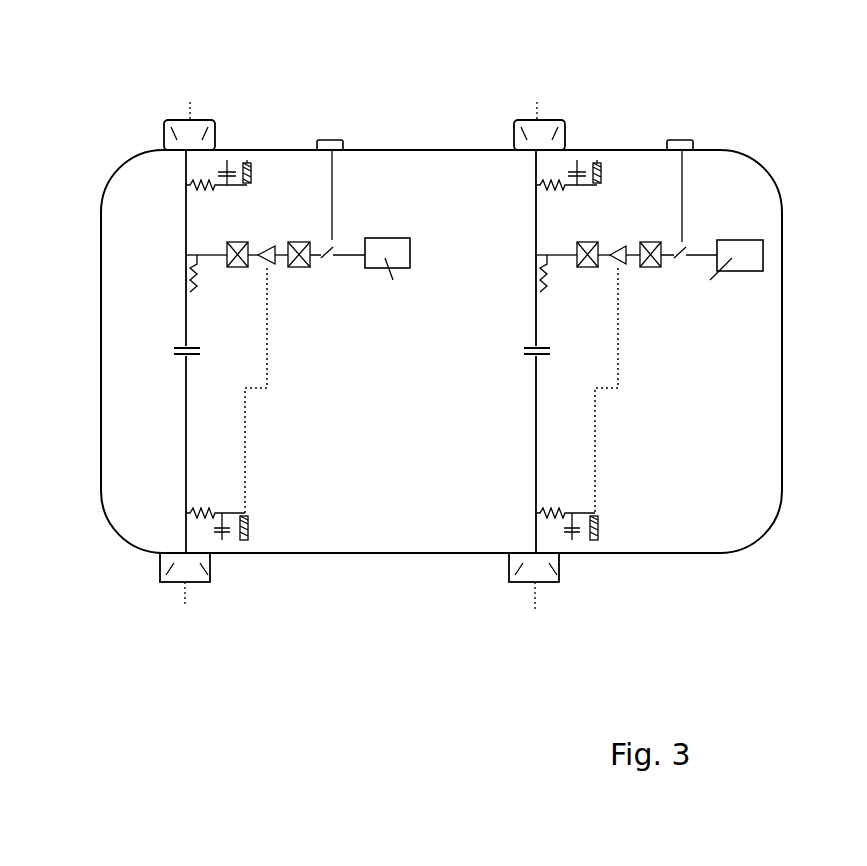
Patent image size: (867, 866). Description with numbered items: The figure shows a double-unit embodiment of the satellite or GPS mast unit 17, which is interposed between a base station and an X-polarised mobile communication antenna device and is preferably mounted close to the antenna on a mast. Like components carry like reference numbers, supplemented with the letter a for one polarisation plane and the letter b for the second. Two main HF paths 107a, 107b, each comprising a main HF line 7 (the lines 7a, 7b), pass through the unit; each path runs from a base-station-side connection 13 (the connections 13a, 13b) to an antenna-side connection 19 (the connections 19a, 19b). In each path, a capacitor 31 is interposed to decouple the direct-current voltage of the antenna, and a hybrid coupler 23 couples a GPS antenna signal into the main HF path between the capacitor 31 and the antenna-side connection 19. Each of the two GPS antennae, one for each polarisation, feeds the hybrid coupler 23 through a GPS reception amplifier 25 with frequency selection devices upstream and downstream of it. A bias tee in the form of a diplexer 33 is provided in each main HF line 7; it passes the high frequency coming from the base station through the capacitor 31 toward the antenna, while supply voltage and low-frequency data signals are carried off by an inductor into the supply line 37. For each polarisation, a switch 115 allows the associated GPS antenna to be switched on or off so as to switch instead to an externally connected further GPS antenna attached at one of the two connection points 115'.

The satellite mast unit 17 is at (723, 528).
The antenna-side connection 19 is at (362, 95).
The antenna-side connection 19a is at (168, 120).
The antenna-side connection 19b is at (525, 120).
The main HF line 7 is at (480, 354).
The main HF line 7a is at (192, 102).
The main HF line 7b is at (540, 100).
The main HF path 107a is at (187, 605).
The main HF path 107b is at (537, 600).
The base-station-side connection 13 is at (375, 601).
The base-station-side connection 13a is at (163, 578).
The base-station-side connection 13b is at (512, 580).
The hybrid coupler 23 is at (178, 281).
The GPS reception amplifier 25 is at (262, 248).
The capacitor 31 is at (168, 350).
The bias tee 33 is at (213, 493).
The supply line 37 is at (246, 445).
The switch 115 is at (542, 224).
The connection point 115' is at (540, 175).